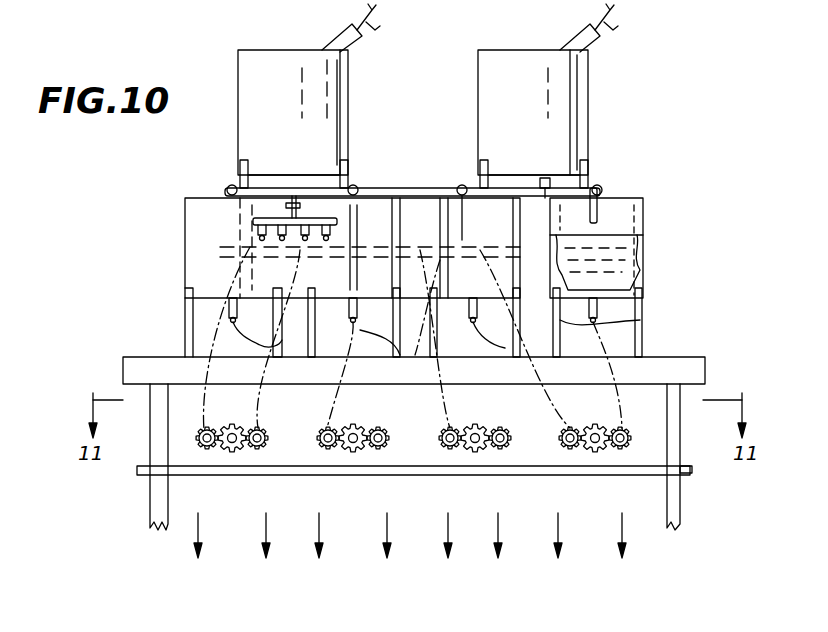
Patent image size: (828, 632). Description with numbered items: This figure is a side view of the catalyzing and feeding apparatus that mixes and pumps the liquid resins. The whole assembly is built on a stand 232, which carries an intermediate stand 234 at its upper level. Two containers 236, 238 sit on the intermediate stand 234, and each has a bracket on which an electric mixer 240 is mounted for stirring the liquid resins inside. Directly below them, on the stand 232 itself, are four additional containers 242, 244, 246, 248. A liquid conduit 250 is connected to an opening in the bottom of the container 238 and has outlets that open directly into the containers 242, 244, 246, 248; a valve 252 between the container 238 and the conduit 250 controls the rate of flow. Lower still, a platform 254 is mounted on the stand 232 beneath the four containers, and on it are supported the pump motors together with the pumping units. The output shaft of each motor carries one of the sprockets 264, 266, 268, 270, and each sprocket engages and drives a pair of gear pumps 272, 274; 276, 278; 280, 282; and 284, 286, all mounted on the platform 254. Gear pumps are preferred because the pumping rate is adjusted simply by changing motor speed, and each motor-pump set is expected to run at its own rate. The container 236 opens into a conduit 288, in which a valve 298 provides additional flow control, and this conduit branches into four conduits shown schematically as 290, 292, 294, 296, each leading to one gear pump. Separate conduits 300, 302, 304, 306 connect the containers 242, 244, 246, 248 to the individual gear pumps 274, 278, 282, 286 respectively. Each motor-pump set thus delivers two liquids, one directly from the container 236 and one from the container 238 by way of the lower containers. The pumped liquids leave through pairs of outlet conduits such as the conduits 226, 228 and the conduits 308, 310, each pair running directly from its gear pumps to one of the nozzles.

The outlet conduit 226 is at (200, 490).
The outlet conduit 228 is at (282, 565).
The stand 232 is at (695, 358).
The intermediate stand 234 is at (455, 247).
The container 236 is at (337, 95).
The container 238 is at (565, 105).
The electric mixer 240 is at (328, 32).
The container 242 is at (185, 226).
The container 244 is at (375, 203).
The container 246 is at (462, 200).
The container 248 is at (645, 208).
The liquid conduit 250 is at (592, 196).
The valve 252 is at (560, 152).
The platform 254 is at (660, 479).
The sprocket 264 is at (227, 560).
The sprocket 266 is at (348, 564).
The sprocket 268 is at (483, 565).
The sprocket 270 is at (600, 560).
The gear pump 272 is at (161, 426).
The gear pump 274 is at (232, 508).
The gear pump 276 is at (329, 417).
The gear pump 278 is at (368, 418).
The gear pump 280 is at (475, 512).
The gear pump 282 is at (548, 557).
The gear pump 284 is at (534, 418).
The gear pump 286 is at (595, 512).
The conduit 288 is at (280, 182).
The conduit branch 290 is at (207, 328).
The conduit branch 292 is at (297, 375).
The conduit branch 294 is at (432, 339).
The conduit branch 296 is at (445, 297).
The valve 298 is at (306, 190).
The conduit 300 is at (251, 338).
The conduit 302 is at (380, 378).
The conduit 304 is at (525, 339).
The conduit 306 is at (605, 322).
The outlet conduit 308 is at (332, 572).
The outlet conduit 310 is at (425, 561).